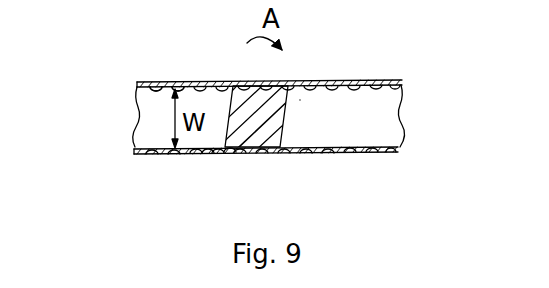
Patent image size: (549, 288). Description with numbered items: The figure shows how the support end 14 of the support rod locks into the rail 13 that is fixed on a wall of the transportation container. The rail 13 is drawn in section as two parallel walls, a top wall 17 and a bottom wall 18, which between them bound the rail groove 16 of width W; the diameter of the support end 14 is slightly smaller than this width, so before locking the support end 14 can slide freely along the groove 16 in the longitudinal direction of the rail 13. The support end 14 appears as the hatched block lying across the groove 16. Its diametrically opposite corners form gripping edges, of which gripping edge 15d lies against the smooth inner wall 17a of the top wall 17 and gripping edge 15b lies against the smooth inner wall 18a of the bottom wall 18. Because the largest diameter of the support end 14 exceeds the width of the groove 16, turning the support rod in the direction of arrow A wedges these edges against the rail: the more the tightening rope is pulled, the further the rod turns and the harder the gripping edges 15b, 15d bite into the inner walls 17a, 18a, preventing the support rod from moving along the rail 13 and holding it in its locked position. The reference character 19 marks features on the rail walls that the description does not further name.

The rail 13 is at (428, 96).
The support end 14 is at (277, 117).
The gripping edge 15b is at (271, 149).
The gripping edge 15d is at (238, 82).
The rail groove 16 is at (378, 132).
The top wall 17 is at (322, 81).
The inner wall of top wall 17a is at (139, 91).
The bottom wall 18 is at (374, 154).
The inner wall of bottom wall 18a is at (137, 133).
The stitches 19 is at (185, 82).